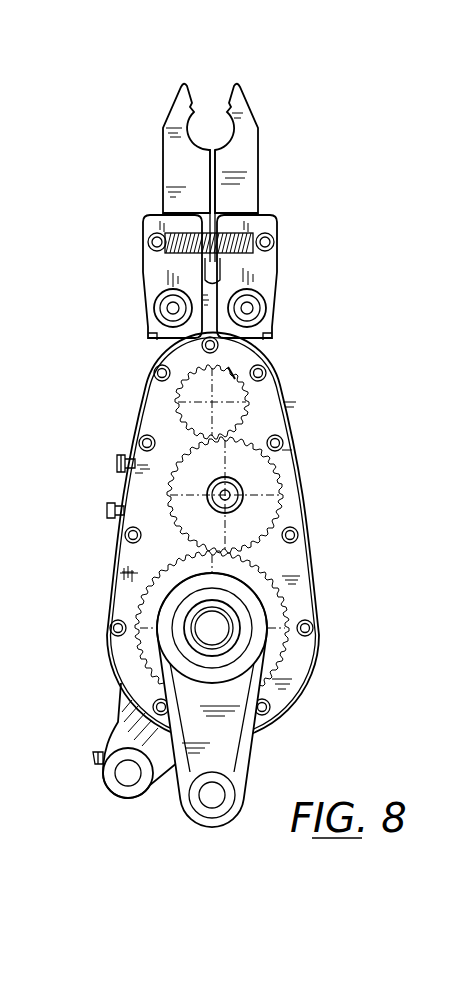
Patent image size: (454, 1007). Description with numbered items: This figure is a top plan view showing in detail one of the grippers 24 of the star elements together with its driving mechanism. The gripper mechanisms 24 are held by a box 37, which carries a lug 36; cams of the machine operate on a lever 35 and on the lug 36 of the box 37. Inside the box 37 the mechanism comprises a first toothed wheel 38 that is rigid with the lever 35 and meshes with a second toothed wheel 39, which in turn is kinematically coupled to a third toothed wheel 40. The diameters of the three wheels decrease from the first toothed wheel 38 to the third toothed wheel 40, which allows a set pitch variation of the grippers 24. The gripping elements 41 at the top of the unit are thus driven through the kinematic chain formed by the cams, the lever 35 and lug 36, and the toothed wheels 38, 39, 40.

The gripper mechanism 24 is at (87, 575).
The lever 35 is at (240, 700).
The lug 36 is at (119, 727).
The box 37 is at (270, 413).
The first toothed wheel 38 is at (288, 598).
The second toothed wheel 39 is at (292, 468).
The third toothed wheel 40 is at (272, 343).
The gripping elements 41 is at (258, 163).